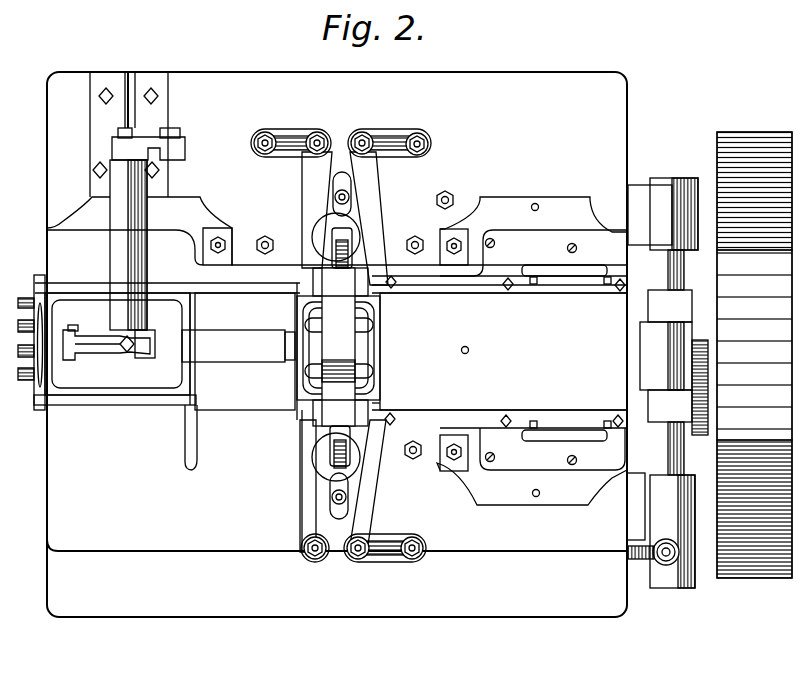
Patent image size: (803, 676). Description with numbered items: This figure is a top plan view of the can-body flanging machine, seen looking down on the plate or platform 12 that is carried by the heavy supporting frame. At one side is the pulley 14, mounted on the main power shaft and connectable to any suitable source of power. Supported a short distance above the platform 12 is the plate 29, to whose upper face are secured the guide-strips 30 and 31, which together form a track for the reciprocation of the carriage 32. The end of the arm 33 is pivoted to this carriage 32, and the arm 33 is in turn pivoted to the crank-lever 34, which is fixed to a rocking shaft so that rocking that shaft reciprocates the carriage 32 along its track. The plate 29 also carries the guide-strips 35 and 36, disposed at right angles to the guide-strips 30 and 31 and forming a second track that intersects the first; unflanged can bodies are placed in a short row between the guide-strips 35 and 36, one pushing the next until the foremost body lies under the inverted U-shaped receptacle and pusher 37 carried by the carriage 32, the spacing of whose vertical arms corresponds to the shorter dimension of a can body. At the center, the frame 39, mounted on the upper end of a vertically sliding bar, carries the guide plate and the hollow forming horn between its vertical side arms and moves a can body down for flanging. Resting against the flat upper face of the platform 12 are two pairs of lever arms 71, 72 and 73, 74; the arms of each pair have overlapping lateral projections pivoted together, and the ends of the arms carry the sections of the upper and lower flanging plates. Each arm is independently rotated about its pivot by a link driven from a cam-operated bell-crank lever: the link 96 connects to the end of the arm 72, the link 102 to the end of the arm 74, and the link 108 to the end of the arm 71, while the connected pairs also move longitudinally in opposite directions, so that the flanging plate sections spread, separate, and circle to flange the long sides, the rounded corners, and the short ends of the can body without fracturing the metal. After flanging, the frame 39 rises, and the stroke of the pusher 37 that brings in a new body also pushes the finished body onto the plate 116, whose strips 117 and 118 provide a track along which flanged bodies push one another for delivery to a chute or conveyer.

The plate or platform 12 is at (470, 617).
The pulley 14 is at (738, 134).
The plate 29 is at (172, 548).
The guide-strip 30 is at (177, 290).
The guide-strip 31 is at (103, 404).
The carriage 32 is at (157, 396).
The arm 33 is at (152, 350).
The crank-lever 34 is at (100, 353).
The guide-strip 35 is at (192, 455).
The guide-strip 36 is at (297, 420).
The inverted U-shaped receptacle and pusher 37 is at (220, 360).
The frame 39 is at (340, 347).
The lever arm 71 is at (308, 188).
The lever arm 72 is at (378, 200).
The lever arm 73 is at (308, 498).
The lever arm 74 is at (372, 498).
The link 96 is at (390, 140).
The link 102 is at (390, 557).
The link 108 is at (290, 140).
The plate 116 is at (488, 305).
The strip 117 is at (481, 412).
The strip 118 is at (542, 292).